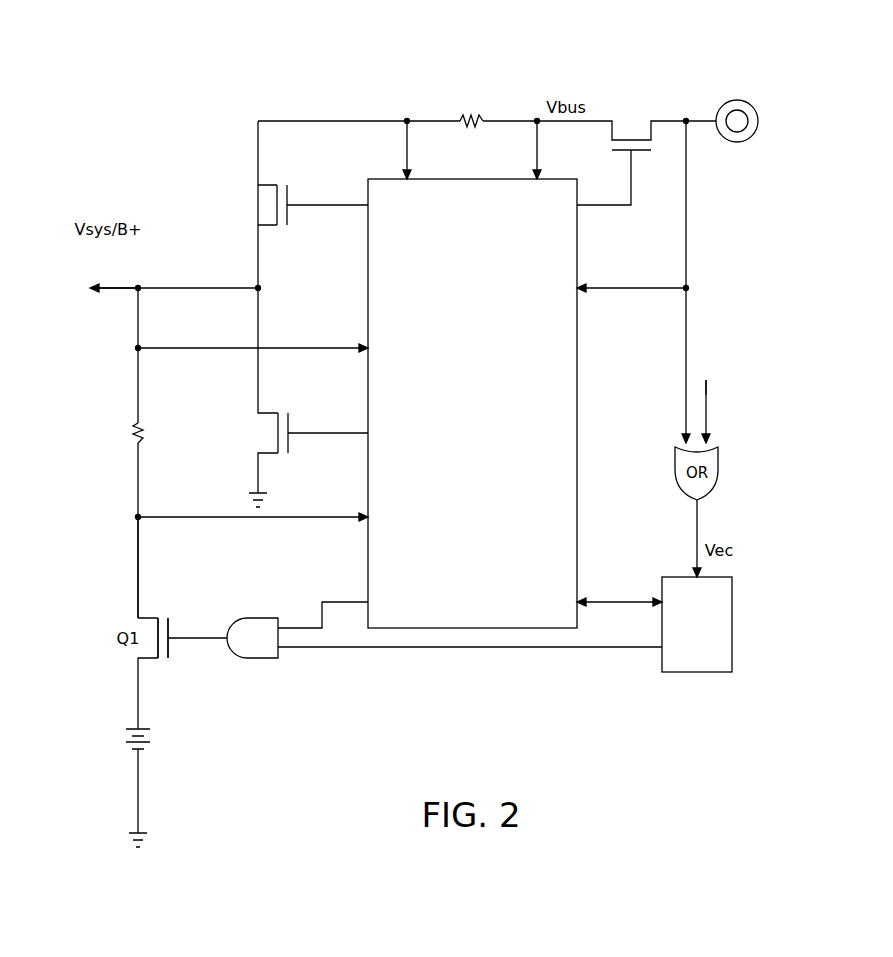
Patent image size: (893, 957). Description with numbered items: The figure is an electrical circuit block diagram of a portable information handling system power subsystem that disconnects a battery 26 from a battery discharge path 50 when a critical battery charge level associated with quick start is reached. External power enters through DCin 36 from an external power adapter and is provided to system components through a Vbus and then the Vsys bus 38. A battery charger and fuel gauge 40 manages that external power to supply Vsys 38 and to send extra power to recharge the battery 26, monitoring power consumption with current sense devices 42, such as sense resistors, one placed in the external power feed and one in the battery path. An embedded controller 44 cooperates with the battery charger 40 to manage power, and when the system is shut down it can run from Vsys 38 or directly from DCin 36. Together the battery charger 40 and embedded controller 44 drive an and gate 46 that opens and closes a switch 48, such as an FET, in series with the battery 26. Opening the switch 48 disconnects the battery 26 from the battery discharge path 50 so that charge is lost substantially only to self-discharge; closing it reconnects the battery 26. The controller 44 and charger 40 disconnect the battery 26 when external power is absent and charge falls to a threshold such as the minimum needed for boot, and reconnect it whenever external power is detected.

The battery 26 is at (116, 742).
The DCin 36 is at (738, 99).
The Vsys bus 38 is at (118, 288).
The battery charger and fuel gauge 40 is at (472, 403).
The current sense device 42 is at (82, 411).
The embedded controller 44 is at (705, 674).
The and gate 46 is at (258, 660).
The switch 48 is at (172, 628).
The battery discharge path 50 is at (134, 563).